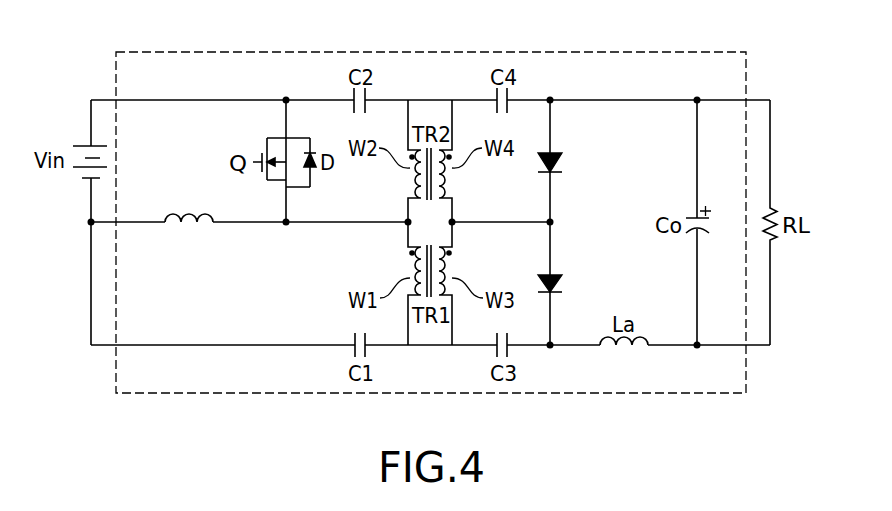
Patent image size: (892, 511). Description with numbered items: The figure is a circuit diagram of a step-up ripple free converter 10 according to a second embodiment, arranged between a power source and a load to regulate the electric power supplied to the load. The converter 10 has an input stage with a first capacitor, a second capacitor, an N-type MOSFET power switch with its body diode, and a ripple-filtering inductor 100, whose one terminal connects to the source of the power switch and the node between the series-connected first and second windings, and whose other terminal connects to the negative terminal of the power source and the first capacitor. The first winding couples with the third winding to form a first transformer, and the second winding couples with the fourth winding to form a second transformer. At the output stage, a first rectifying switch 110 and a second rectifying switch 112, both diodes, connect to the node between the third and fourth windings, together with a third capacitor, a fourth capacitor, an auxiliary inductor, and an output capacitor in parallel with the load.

The step-up ripple free converter 10 is at (431, 52).
The ripple-filtering inductor 100 is at (190, 219).
The first rectifying switch 110 is at (563, 281).
The second rectifying switch 112 is at (563, 158).